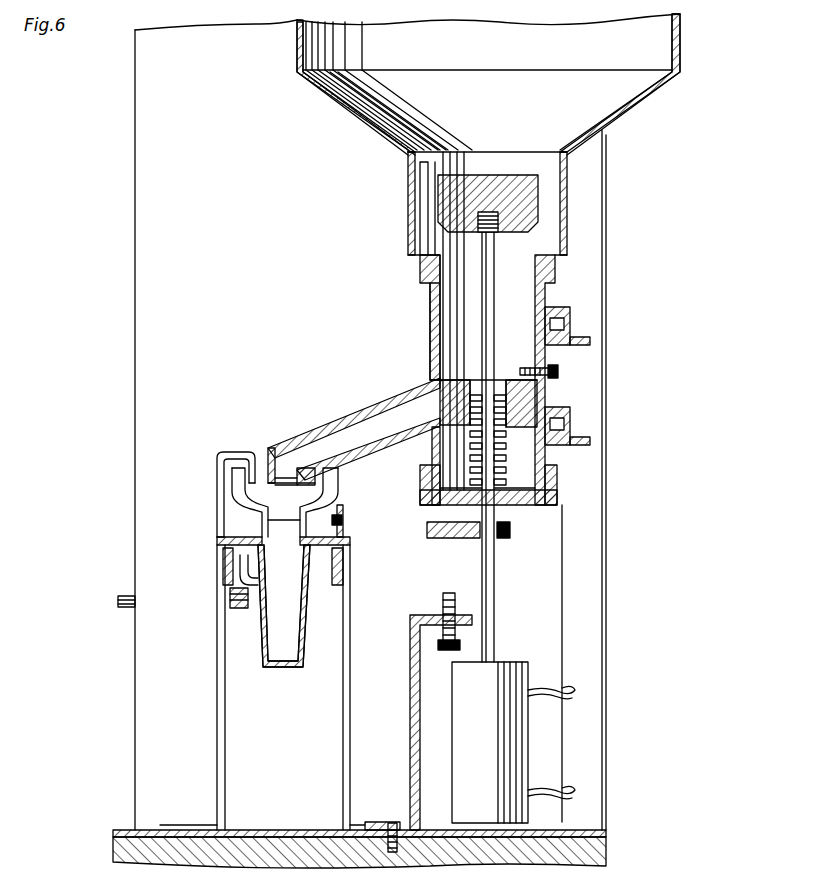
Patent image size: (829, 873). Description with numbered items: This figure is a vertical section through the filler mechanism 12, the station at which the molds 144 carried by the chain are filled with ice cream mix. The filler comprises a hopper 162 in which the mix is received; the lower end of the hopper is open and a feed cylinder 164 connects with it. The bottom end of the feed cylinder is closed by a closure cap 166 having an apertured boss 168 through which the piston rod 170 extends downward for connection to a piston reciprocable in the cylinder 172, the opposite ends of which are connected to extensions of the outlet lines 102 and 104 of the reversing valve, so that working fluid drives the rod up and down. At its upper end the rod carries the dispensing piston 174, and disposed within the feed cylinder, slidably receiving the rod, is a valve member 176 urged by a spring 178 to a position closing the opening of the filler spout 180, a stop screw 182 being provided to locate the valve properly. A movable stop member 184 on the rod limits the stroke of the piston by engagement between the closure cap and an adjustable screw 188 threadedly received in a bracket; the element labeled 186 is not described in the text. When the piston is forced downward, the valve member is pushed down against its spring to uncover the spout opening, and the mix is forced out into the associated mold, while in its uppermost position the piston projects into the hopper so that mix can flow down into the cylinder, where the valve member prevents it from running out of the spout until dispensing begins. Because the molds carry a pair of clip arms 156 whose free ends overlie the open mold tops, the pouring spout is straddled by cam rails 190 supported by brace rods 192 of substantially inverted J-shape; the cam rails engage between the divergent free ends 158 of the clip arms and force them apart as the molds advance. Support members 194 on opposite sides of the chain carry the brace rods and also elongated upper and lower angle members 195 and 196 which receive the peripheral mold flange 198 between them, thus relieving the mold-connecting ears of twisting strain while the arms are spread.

The filler mechanism 12 is at (640, 120).
The hopper 162 is at (680, 45).
The dispensing piston 174 is at (525, 200).
The feed cylinder 164 is at (548, 300).
The stop screw 182 is at (522, 369).
The valve member 176 is at (527, 395).
The filler spout 180 is at (362, 412).
The brace rods 192 is at (218, 450).
The divergent free ends 158 is at (233, 476).
The cam rails 190 is at (325, 468).
The spring 178 is at (507, 457).
The clip arms 156 is at (342, 521).
The closure cap 166 is at (545, 505).
The upper angle member 195 is at (241, 540).
The apertured boss 168 is at (508, 526).
The movable stop member 184 is at (447, 538).
The peripheral mold flange 198 is at (272, 549).
The lower angle member 196 is at (223, 560).
The bolt 186 is at (444, 603).
The piston rod 170 is at (488, 592).
The molds 144 is at (306, 604).
The support members 194 is at (217, 652).
The outlet line 104 is at (549, 692).
The adjustable screw 188 is at (410, 697).
The cylinder 172 is at (512, 736).
The outlet line 102 is at (549, 792).